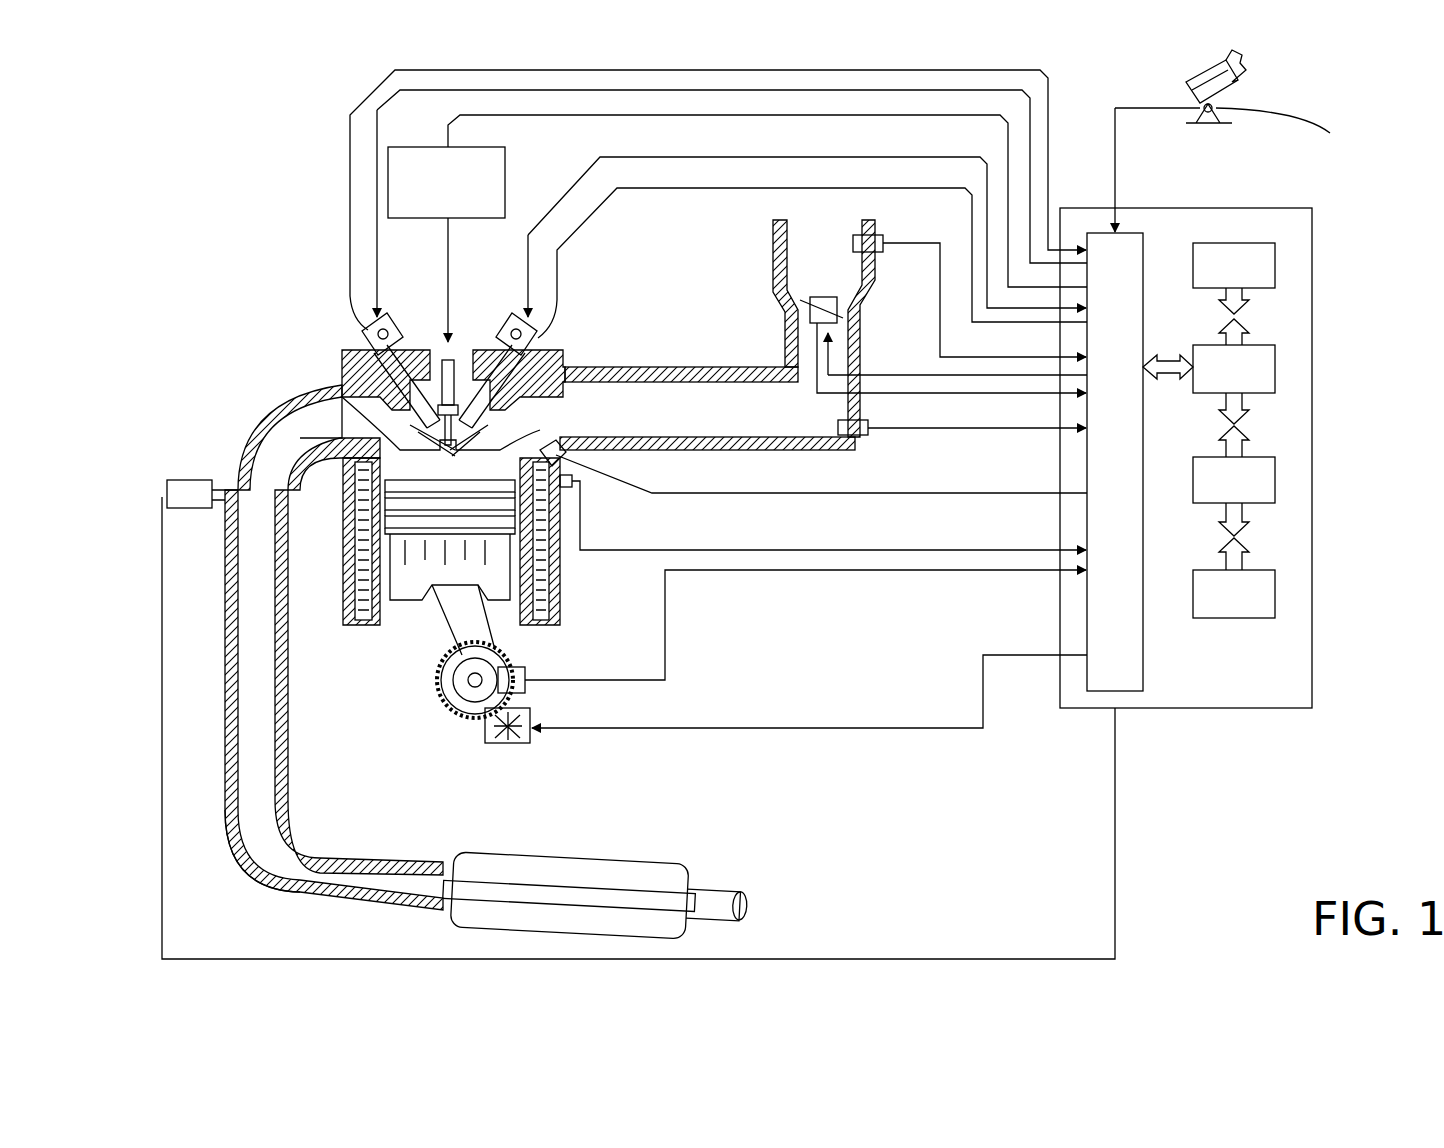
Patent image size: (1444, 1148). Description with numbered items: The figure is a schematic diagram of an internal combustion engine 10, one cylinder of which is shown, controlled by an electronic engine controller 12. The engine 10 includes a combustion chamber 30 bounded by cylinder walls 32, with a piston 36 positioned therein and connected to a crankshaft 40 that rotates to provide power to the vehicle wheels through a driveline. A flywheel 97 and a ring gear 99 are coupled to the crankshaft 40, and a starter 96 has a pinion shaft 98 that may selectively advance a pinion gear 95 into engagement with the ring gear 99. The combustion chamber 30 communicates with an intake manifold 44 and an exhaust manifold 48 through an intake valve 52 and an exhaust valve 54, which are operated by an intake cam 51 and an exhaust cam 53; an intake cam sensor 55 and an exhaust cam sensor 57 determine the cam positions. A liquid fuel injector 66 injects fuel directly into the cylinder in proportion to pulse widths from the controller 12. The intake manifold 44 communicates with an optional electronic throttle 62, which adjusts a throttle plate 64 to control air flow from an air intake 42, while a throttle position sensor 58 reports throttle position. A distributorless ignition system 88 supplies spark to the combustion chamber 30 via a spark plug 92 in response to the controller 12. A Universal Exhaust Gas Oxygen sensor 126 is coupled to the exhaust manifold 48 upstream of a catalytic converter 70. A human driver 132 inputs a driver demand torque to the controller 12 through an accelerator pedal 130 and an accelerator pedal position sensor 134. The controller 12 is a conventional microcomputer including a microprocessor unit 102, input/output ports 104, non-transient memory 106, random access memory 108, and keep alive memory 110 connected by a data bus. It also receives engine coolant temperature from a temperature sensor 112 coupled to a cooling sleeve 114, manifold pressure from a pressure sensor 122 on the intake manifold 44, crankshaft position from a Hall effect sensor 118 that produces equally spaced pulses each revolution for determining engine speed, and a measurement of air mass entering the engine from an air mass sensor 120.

The internal combustion engine 10 is at (268, 293).
The electronic engine controller 12 is at (1300, 208).
The combustion chamber 30 is at (355, 565).
The cylinder walls 32 is at (385, 625).
The piston 36 is at (430, 595).
The crankshaft 40 is at (457, 700).
The air intake 42 is at (824, 328).
The intake manifold 44 is at (707, 408).
The exhaust manifold 48 is at (334, 647).
The intake cam 51 is at (522, 318).
The intake valve 52 is at (500, 397).
The exhaust cam 53 is at (393, 318).
The exhaust valve 54 is at (365, 397).
The intake cam sensor 55 is at (545, 340).
The exhaust cam sensor 57 is at (356, 333).
The throttle position sensor 58 is at (790, 340).
The electronic throttle 62 is at (843, 308).
The throttle plate 64 is at (805, 305).
The liquid fuel injector 66 is at (578, 468).
The catalytic converter 70 is at (468, 857).
The distributorless ignition system 88 is at (400, 147).
The spark plug 92 is at (440, 368).
The pinion gear 95 is at (515, 745).
The starter 96 is at (528, 742).
The flywheel 97 is at (440, 692).
The pinion shaft 98 is at (498, 737).
The ring gear 99 is at (470, 716).
The microprocessor unit 102 is at (1277, 365).
The input/output ports 104 is at (1147, 243).
The non-transient memory 106 is at (1276, 265).
The random access memory 108 is at (1277, 478).
The keep alive memory 110 is at (1277, 590).
The temperature sensor 112 is at (585, 495).
The cooling sleeve 114 is at (560, 575).
The Hall effect sensor 118 is at (530, 668).
The air mass sensor 120 is at (870, 253).
The pressure sensor 122 is at (866, 437).
The Universal Exhaust Gas Oxygen sensor 126 is at (167, 485).
The accelerator pedal 130 is at (1185, 86).
The human driver 132 is at (1244, 68).
The accelerator pedal position sensor 134 is at (1243, 168).